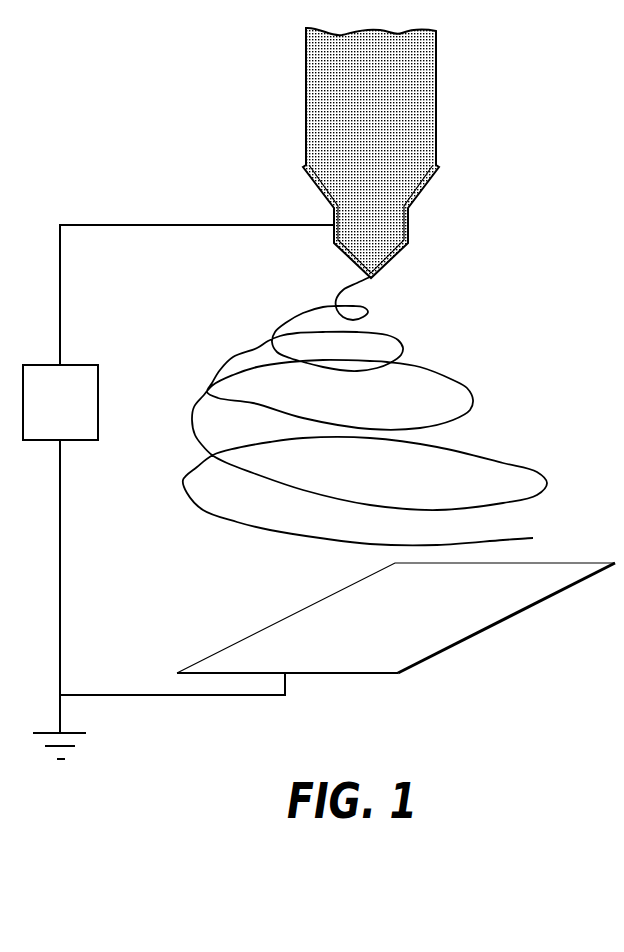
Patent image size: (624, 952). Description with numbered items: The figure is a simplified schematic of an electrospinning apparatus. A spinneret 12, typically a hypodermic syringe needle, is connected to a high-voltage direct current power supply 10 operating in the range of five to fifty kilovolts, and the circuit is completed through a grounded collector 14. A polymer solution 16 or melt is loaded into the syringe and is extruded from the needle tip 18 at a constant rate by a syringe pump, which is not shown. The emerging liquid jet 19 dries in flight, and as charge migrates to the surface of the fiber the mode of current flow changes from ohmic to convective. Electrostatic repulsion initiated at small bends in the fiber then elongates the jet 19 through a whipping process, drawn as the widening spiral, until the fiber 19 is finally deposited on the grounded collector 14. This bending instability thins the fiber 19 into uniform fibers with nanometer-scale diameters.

The high-voltage direct current power supply 10 is at (83, 363).
The spinneret 12 is at (303, 13).
The grounded collector 14 is at (503, 620).
The polymer solution 16 is at (423, 92).
The needle tip 18 is at (410, 222).
The liquid jet 19 is at (467, 383).